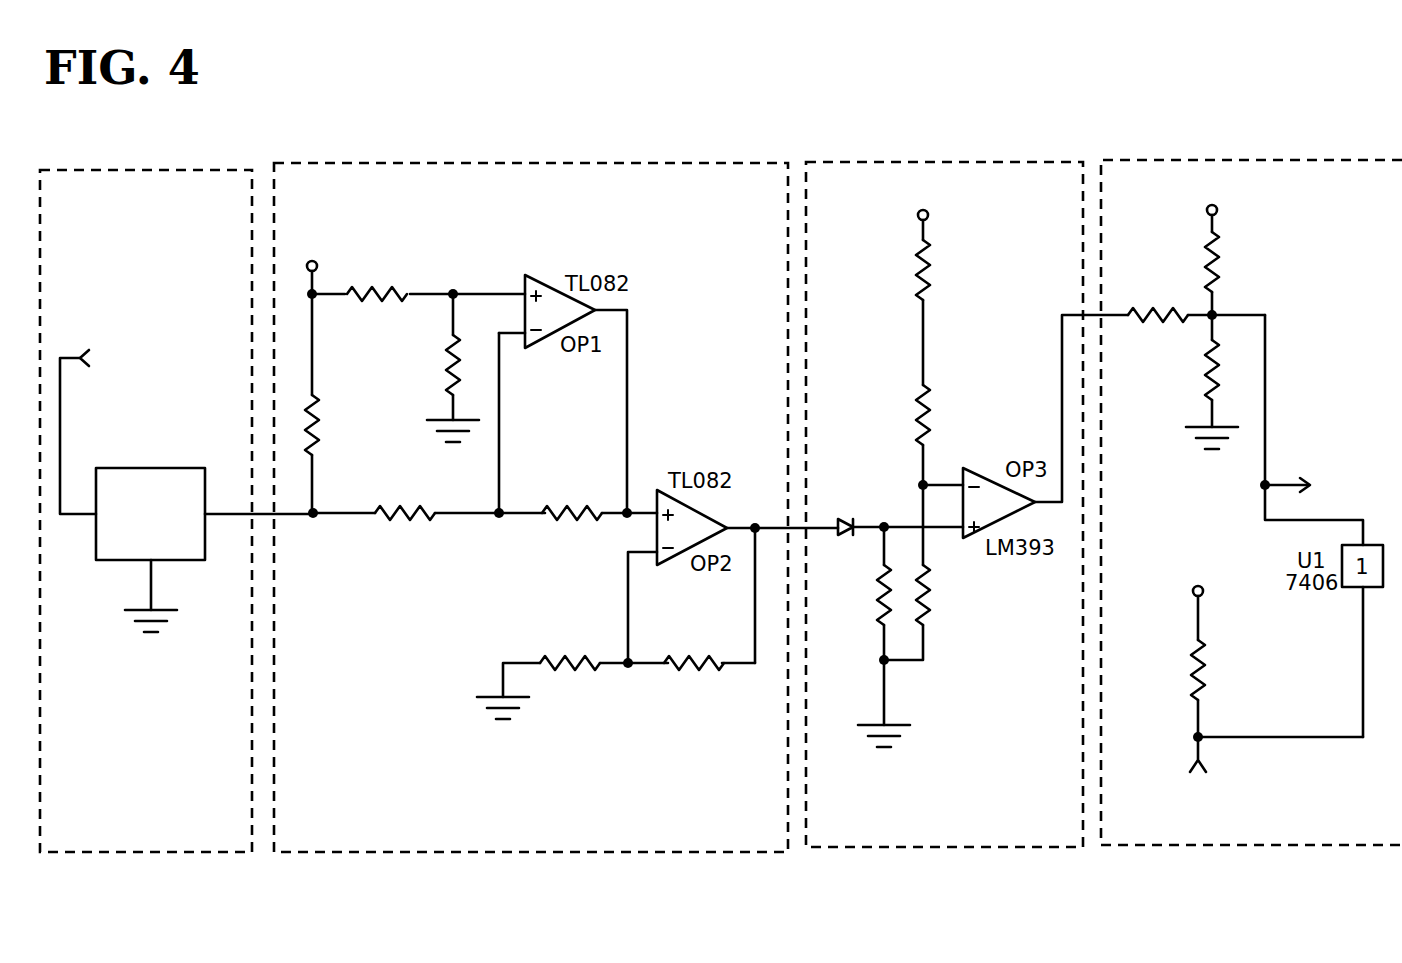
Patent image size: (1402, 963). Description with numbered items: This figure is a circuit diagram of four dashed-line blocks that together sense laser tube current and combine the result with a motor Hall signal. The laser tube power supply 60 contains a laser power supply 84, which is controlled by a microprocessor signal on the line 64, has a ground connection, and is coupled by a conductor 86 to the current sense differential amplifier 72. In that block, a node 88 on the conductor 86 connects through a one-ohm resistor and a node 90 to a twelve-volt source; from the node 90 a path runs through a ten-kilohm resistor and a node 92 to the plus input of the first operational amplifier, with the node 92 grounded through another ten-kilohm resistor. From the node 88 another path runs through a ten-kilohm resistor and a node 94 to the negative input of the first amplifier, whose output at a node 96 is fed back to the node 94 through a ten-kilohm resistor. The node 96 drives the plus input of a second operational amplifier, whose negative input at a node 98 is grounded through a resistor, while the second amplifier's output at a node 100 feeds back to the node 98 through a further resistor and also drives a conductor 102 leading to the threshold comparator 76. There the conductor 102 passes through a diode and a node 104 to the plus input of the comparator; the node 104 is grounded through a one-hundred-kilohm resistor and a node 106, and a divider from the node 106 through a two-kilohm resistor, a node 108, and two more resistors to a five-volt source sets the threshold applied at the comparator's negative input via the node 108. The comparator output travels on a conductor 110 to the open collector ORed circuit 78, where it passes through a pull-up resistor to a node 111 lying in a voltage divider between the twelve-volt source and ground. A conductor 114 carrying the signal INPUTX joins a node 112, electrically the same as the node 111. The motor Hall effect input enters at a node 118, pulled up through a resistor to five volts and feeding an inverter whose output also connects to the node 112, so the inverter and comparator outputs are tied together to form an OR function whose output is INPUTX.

The laser tube power supply 60 is at (170, 170).
The line 64 is at (60, 450).
The current sense differential amplifier 72 is at (693, 163).
The threshold comparator 76 is at (995, 162).
The open collector ORed circuit 78 is at (1238, 160).
The laser power supply 84 is at (173, 468).
The conductor 86 is at (292, 514).
The node 88 is at (315, 516).
The node 90 is at (314, 297).
The node 92 is at (455, 291).
The node 94 is at (499, 516).
The node 96 is at (626, 517).
The node 98 is at (630, 665).
The node 100 is at (757, 526).
The conductor 102 is at (778, 528).
The node 104 is at (885, 524).
The node 106 is at (887, 663).
The node 108 is at (921, 483).
The conductor 110 is at (1060, 331).
The node 111 is at (1214, 313).
The node 112 is at (1262, 487).
The conductor 114 is at (1290, 483).
The node 118 is at (1196, 735).